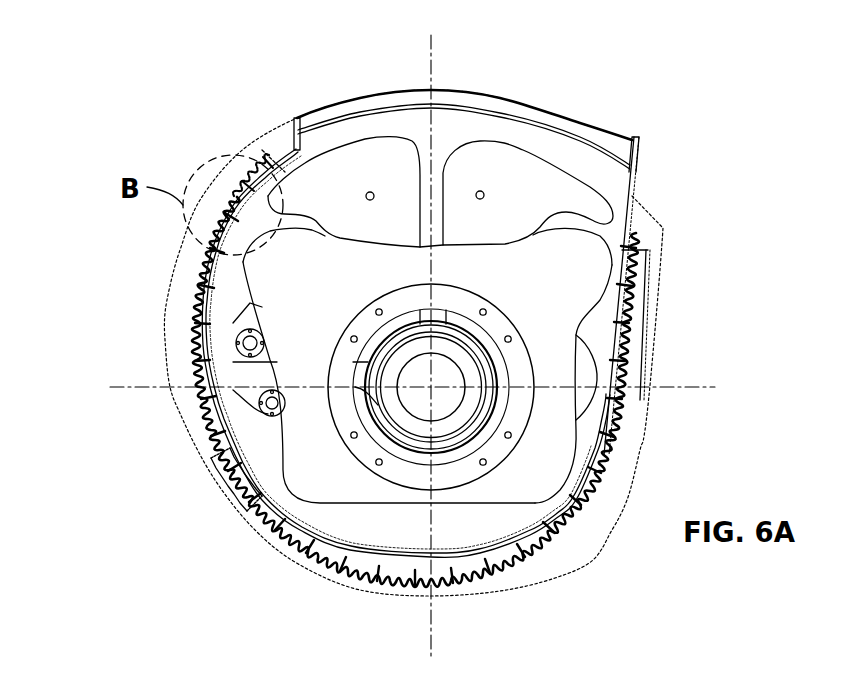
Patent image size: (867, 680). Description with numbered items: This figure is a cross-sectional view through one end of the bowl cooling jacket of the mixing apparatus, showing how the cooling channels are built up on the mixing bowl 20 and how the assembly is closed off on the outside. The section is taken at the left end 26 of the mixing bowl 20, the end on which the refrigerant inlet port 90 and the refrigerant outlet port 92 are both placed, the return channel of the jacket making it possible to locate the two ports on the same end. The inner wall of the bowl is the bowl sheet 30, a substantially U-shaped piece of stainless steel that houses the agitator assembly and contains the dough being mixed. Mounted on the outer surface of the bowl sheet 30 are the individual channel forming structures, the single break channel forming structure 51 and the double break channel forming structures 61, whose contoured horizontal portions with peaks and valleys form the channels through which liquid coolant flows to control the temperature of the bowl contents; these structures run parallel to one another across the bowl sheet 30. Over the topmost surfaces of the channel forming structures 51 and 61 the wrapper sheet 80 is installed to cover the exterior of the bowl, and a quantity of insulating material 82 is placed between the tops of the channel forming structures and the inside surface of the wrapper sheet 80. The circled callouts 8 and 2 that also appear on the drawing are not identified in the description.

The mixing bowl 20 is at (118, 50).
The left end 26 is at (447, 128).
The bowl sheet 30 is at (637, 150).
The single break channel forming structure 51 is at (178, 283).
The double break channel forming structure 61 is at (658, 248).
The wrapper sheet 80 is at (648, 410).
The insulating material 82 is at (400, 590).
The refrigerant inlet port 90 is at (190, 364).
The refrigerant outlet port 92 is at (240, 355).
The wear plate segment 8 is at (247, 503).
The wear strip 2 is at (568, 531).